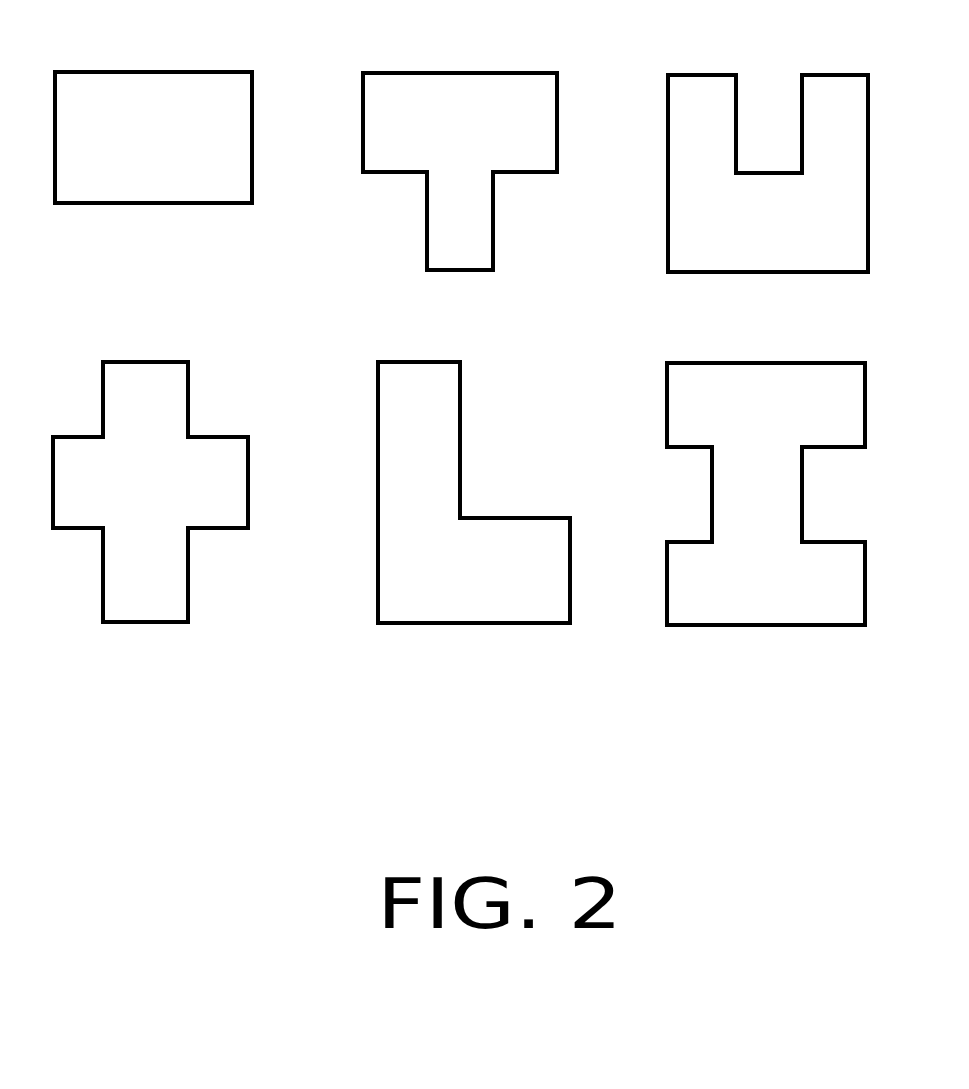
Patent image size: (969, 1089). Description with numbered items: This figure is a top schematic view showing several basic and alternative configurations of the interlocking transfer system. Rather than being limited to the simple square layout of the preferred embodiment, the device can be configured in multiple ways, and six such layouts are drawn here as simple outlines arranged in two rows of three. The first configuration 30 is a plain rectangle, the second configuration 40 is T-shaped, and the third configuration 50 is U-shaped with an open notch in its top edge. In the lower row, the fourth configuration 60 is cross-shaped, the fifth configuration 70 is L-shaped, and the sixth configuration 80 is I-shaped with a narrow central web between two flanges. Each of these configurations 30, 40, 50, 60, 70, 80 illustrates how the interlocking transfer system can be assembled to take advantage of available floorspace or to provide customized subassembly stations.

The configuration 30 is at (206, 76).
The configuration 40 is at (500, 75).
The configuration 50 is at (702, 75).
The configuration 60 is at (142, 360).
The configuration 70 is at (438, 362).
The configuration 80 is at (758, 363).